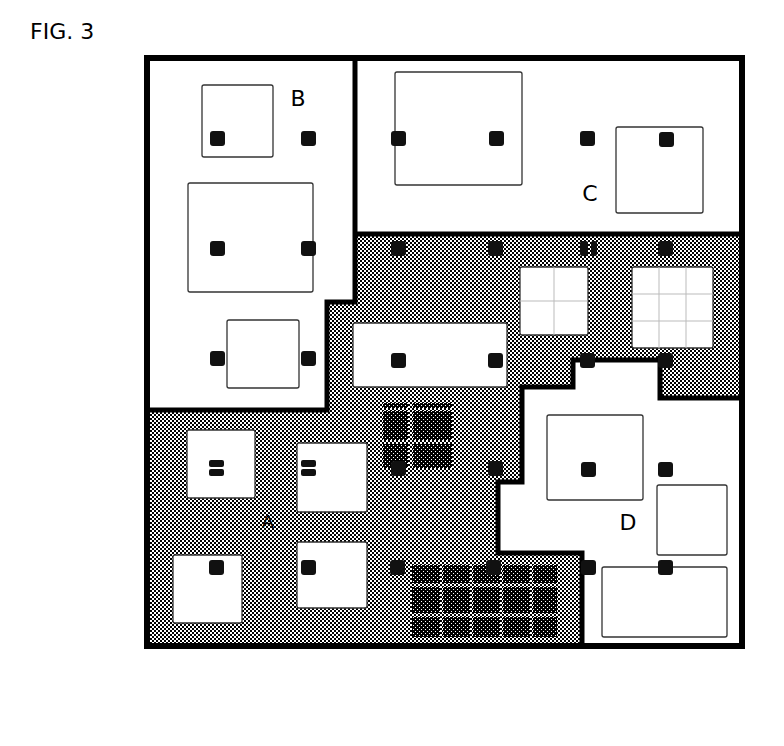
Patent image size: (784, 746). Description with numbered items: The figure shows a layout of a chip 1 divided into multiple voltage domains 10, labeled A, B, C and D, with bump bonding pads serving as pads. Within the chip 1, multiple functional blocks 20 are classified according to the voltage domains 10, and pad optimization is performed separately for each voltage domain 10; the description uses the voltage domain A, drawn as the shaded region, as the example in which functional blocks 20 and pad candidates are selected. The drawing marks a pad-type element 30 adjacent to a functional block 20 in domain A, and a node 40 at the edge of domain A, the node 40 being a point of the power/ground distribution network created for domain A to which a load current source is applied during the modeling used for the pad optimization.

The chip 1 is at (132, 353).
The voltage domain 10 is at (155, 465).
The functional block 20 is at (185, 603).
The contact 30 is at (214, 566).
The node 40 is at (278, 637).